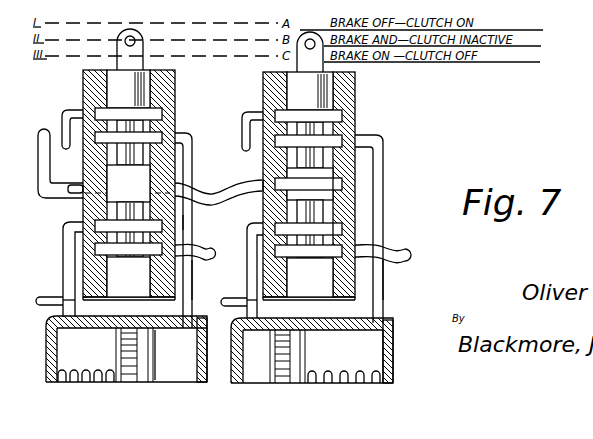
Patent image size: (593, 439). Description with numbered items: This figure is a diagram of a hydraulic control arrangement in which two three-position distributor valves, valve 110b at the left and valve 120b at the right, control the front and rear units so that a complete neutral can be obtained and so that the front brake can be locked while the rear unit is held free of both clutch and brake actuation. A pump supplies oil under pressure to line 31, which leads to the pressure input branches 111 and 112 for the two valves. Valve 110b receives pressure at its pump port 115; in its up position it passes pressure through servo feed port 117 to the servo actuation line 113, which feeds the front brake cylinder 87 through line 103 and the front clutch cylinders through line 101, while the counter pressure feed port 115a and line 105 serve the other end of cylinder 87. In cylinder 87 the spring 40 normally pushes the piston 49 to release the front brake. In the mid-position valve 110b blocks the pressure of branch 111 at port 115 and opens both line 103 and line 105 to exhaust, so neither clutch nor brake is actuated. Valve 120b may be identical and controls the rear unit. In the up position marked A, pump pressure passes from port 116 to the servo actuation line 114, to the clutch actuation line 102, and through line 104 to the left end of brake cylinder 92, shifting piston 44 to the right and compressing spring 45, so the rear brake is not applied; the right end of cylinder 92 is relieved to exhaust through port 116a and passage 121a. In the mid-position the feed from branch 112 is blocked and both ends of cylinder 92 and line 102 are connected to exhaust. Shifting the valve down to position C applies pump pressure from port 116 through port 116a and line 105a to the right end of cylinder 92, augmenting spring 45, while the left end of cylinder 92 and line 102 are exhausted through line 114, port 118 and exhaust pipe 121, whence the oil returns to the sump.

The line 31 is at (40, 133).
The spring 40 is at (126, 349).
The piston 44 is at (276, 356).
The spring 45 is at (348, 373).
The piston 49 is at (140, 362).
The brake cylinder 87 is at (158, 329).
The brake cylinder 92 is at (394, 338).
The line 101 is at (55, 296).
The line 102 is at (236, 298).
The line 103 is at (76, 302).
The line 104 is at (258, 310).
The line 105 is at (192, 273).
The line 105a is at (384, 285).
The distributor valve 110b is at (143, 97).
The pressure input branch 111 is at (76, 184).
The pressure input branch 112 is at (250, 182).
The servo actuation line 113 is at (62, 236).
The servo actuation line 114 is at (256, 226).
The pump port 115 is at (186, 184).
The counter pressure feed port 115a is at (192, 138).
The feed port 116 is at (342, 184).
The port 116a is at (356, 137).
The servo feed port 117 is at (191, 222).
The port 118 is at (342, 230).
The distributor valve 120b is at (326, 97).
The exhaust pipe 121 is at (205, 252).
The passage 121a is at (78, 110).